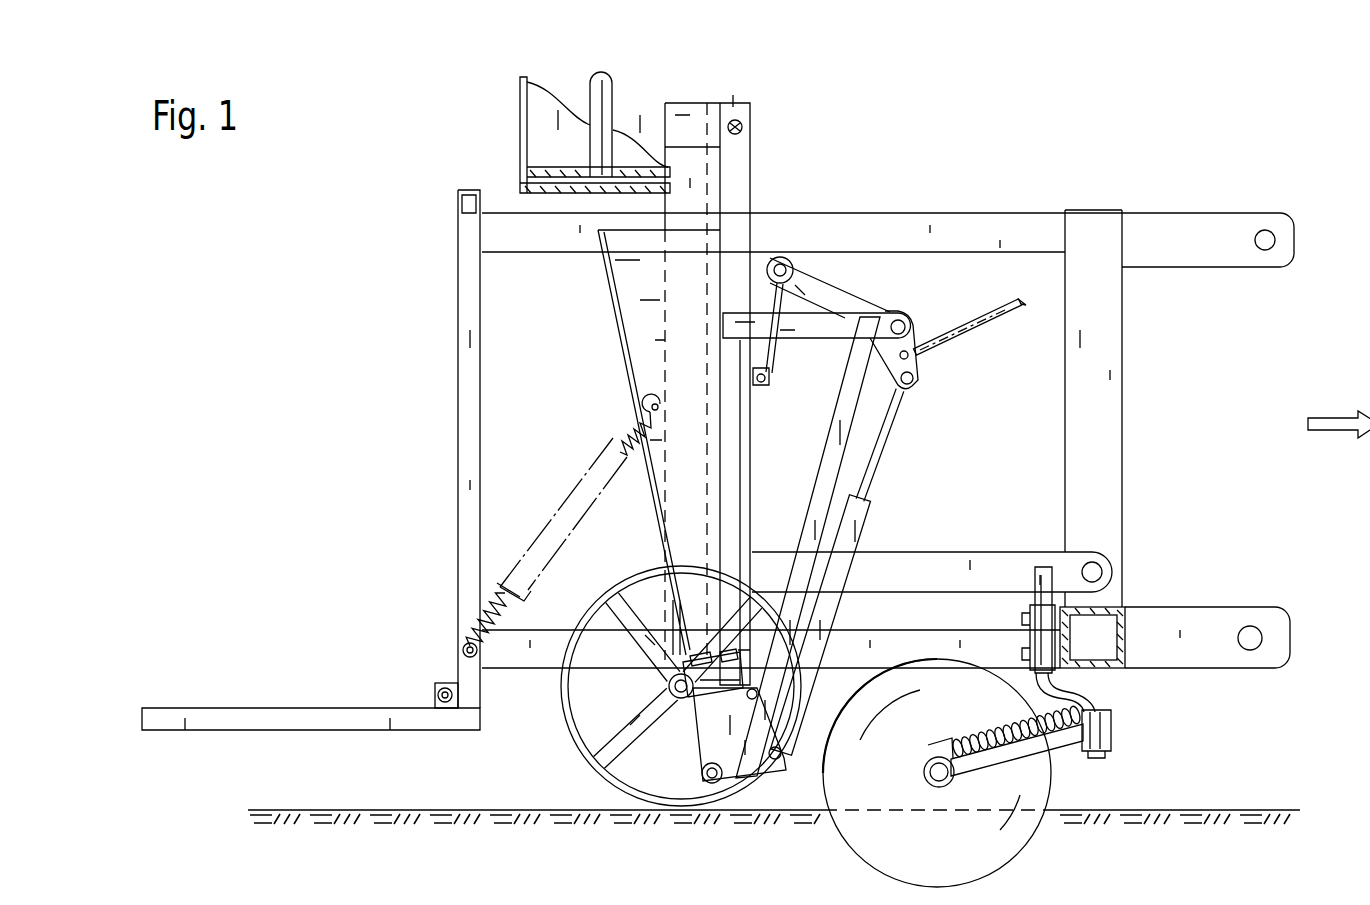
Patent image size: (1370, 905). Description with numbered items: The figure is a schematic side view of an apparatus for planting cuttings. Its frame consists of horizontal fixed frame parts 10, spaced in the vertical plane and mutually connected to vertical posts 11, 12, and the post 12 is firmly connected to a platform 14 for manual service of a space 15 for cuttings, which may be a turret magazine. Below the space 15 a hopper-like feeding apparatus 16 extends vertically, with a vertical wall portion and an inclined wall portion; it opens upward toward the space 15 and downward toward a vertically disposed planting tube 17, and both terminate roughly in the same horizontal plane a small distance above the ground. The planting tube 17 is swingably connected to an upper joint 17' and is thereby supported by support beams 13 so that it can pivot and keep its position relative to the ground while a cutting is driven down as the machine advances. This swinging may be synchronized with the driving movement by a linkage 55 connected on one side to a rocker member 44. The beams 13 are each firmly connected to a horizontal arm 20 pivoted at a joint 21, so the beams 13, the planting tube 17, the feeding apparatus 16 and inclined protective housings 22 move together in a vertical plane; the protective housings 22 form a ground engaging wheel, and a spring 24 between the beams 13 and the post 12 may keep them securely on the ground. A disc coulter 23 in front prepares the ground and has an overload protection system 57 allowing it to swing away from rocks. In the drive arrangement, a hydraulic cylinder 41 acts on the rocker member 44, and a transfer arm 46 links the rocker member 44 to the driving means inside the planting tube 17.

The horizontal fixed frame parts 10 is at (900, 222).
The vertical post 11 is at (1113, 372).
The vertical post 12 is at (468, 392).
The support beams 13 is at (690, 196).
The platform 14 is at (285, 708).
The space for cuttings 15 is at (626, 100).
The feeding apparatus 16 is at (608, 302).
The planting tube 17 is at (767, 390).
The upper joint 17' is at (762, 97).
The horizontal arm 20 is at (935, 552).
The joint 21 is at (1104, 570).
The protective housings 22 is at (592, 770).
The disc coulter 23 is at (1010, 825).
The spring 24 is at (615, 418).
The hydraulic cylinder 41 is at (880, 517).
The rocker member 44 is at (852, 296).
The transfer arm 46 is at (770, 350).
The linkage 55 is at (985, 322).
The overload protection system 57 is at (1095, 758).